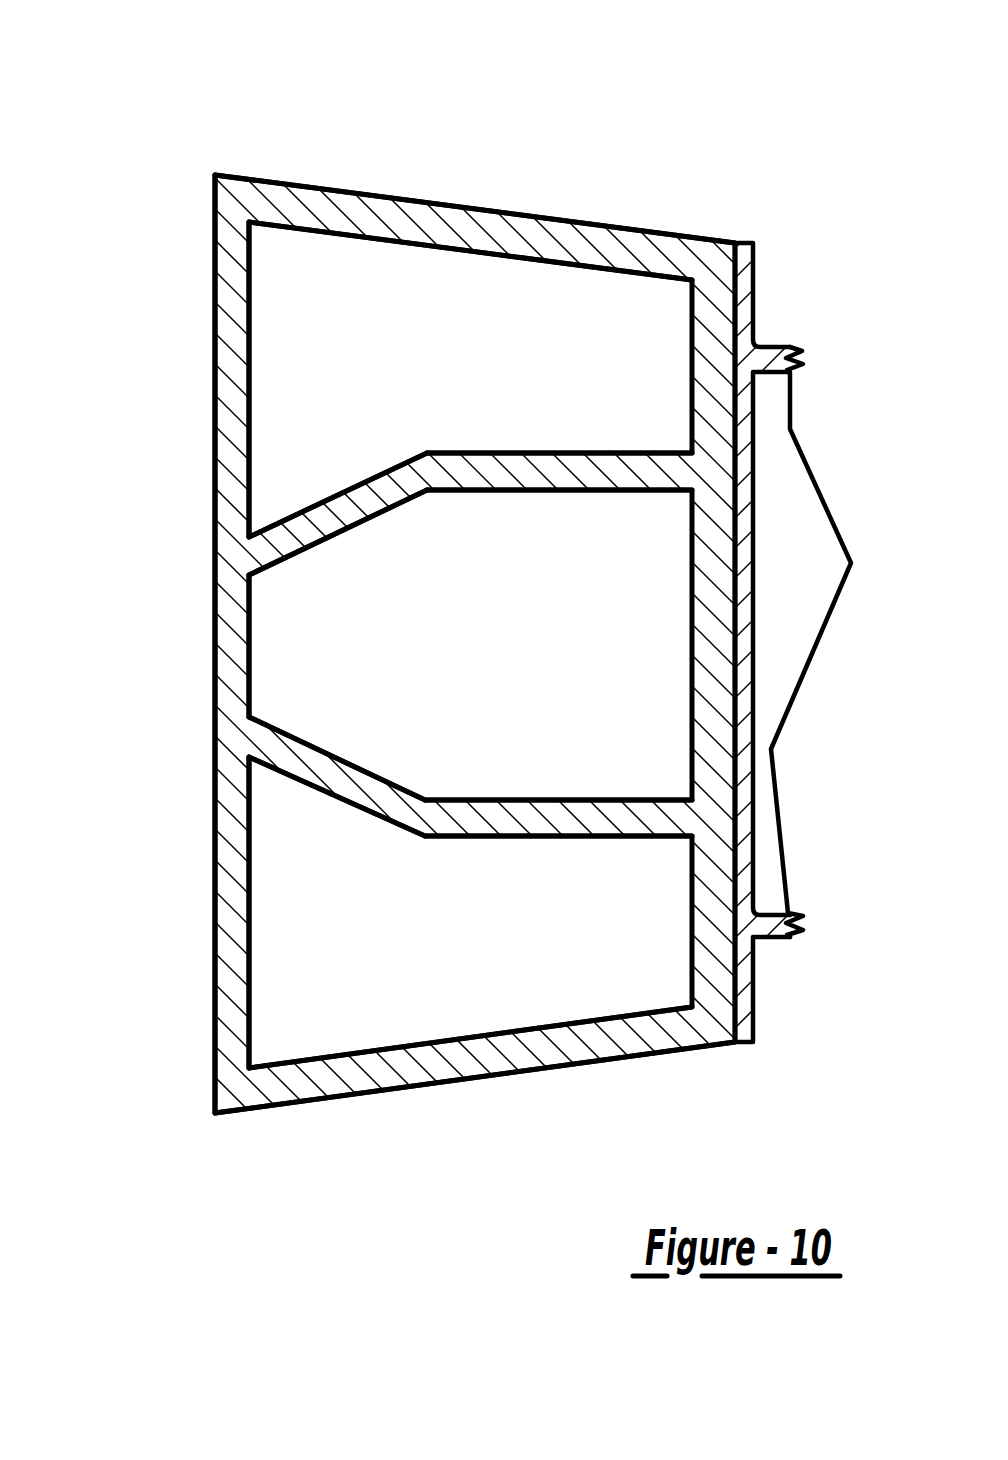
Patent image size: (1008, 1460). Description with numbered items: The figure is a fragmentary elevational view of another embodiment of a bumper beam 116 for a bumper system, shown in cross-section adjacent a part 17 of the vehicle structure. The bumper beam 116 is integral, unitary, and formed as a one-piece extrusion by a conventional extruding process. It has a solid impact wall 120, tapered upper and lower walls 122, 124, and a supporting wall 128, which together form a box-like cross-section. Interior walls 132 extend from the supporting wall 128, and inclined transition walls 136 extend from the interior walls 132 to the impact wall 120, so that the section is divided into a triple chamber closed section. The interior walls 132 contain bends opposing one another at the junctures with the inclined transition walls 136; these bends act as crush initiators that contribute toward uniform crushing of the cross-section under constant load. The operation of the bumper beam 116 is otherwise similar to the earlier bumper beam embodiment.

The housing 17 is at (757, 1010).
The bumper beam 116 is at (580, 222).
The impact wall 120 is at (235, 252).
The upper wall 122 is at (367, 215).
The lower wall 124 is at (532, 1050).
The supporting wall 128 is at (715, 963).
The interior walls 132 is at (595, 472).
The inclined transition walls 136 is at (372, 495).